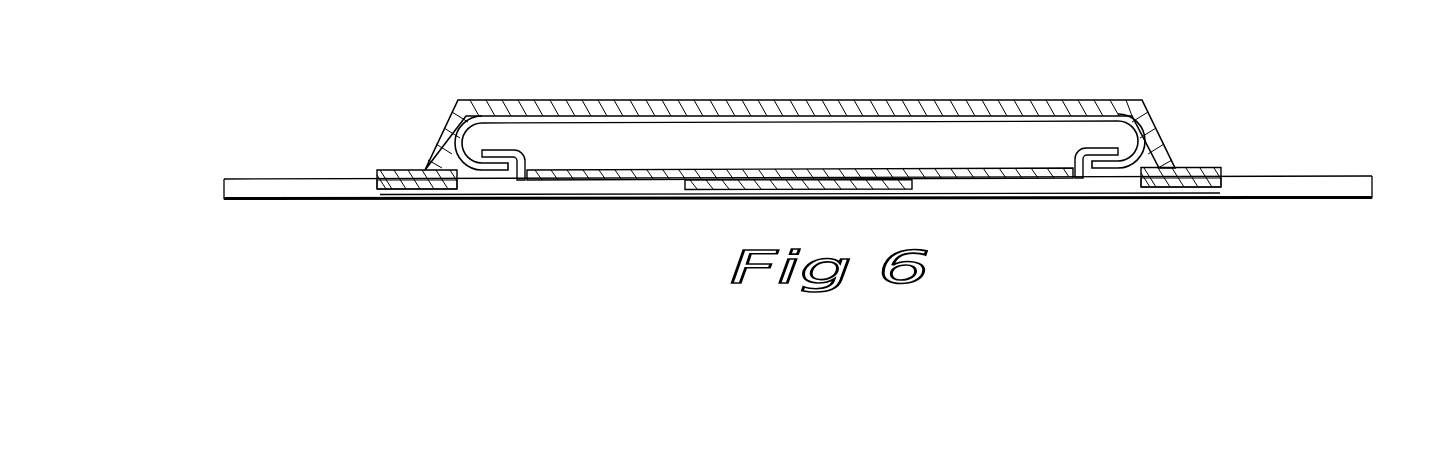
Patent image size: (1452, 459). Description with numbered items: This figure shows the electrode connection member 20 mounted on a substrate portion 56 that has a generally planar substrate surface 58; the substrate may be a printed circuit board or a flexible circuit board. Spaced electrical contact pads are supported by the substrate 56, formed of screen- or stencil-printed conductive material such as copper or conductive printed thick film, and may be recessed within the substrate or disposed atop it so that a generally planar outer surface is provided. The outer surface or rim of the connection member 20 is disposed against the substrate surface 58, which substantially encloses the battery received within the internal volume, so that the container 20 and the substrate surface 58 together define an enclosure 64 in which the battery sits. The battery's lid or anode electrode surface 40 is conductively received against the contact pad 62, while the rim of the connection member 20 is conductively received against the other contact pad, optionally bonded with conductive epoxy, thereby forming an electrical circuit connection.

The connection member 20 is at (416, 72).
The electrode 40 is at (992, 178).
The substrate portion 56 is at (269, 192).
The substrate surface 58 is at (305, 179).
The contact pad 62 is at (737, 190).
The enclosure 64 is at (1384, 97).